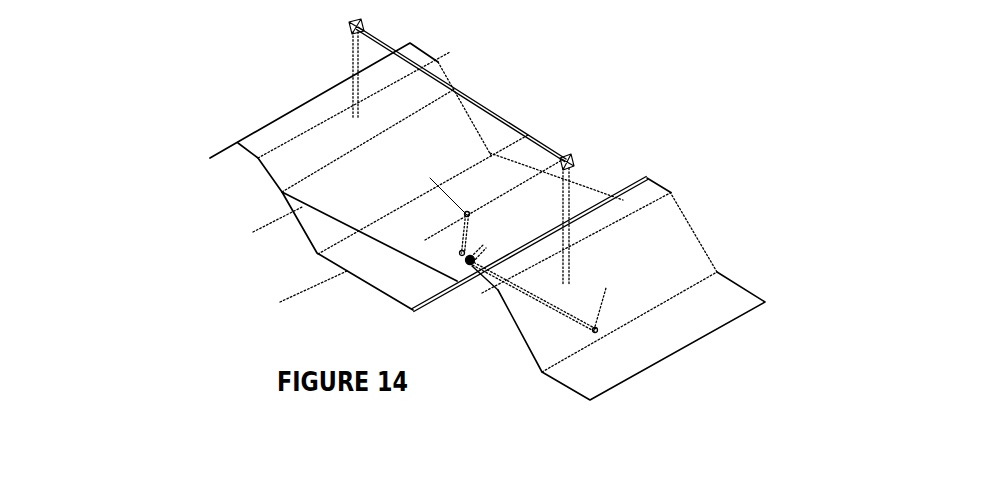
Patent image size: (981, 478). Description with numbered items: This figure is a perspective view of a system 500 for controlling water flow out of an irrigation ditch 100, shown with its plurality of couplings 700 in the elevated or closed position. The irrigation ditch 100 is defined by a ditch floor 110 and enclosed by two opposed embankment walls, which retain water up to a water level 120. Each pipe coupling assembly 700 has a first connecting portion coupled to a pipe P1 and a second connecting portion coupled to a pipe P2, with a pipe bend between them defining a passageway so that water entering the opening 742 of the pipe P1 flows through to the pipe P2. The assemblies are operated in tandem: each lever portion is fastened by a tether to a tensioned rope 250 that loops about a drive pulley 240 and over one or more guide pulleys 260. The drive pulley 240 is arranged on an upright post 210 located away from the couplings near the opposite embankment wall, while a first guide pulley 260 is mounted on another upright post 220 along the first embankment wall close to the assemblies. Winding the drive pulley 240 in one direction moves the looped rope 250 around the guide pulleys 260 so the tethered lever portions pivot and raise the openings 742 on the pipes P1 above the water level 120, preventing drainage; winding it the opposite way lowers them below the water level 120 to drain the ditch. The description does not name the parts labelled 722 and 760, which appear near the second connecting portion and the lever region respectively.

The system 500 is at (232, 188).
The irrigation ditch 100 is at (265, 259).
The ditch floor 110 is at (335, 251).
The water level 120 is at (360, 148).
The upright post 210 is at (346, 98).
The upright post 220 is at (580, 255).
The drive pulley 240 is at (348, 33).
The tensioned rope 250 is at (462, 94).
The guide pulley 260 is at (575, 163).
The pipe coupling assembly 700 is at (448, 274).
The guide track 722 is at (577, 242).
The opening 742 is at (452, 165).
The pivot 760 is at (488, 240).
The pipe P1 is at (454, 235).
The pipe P2 is at (539, 305).